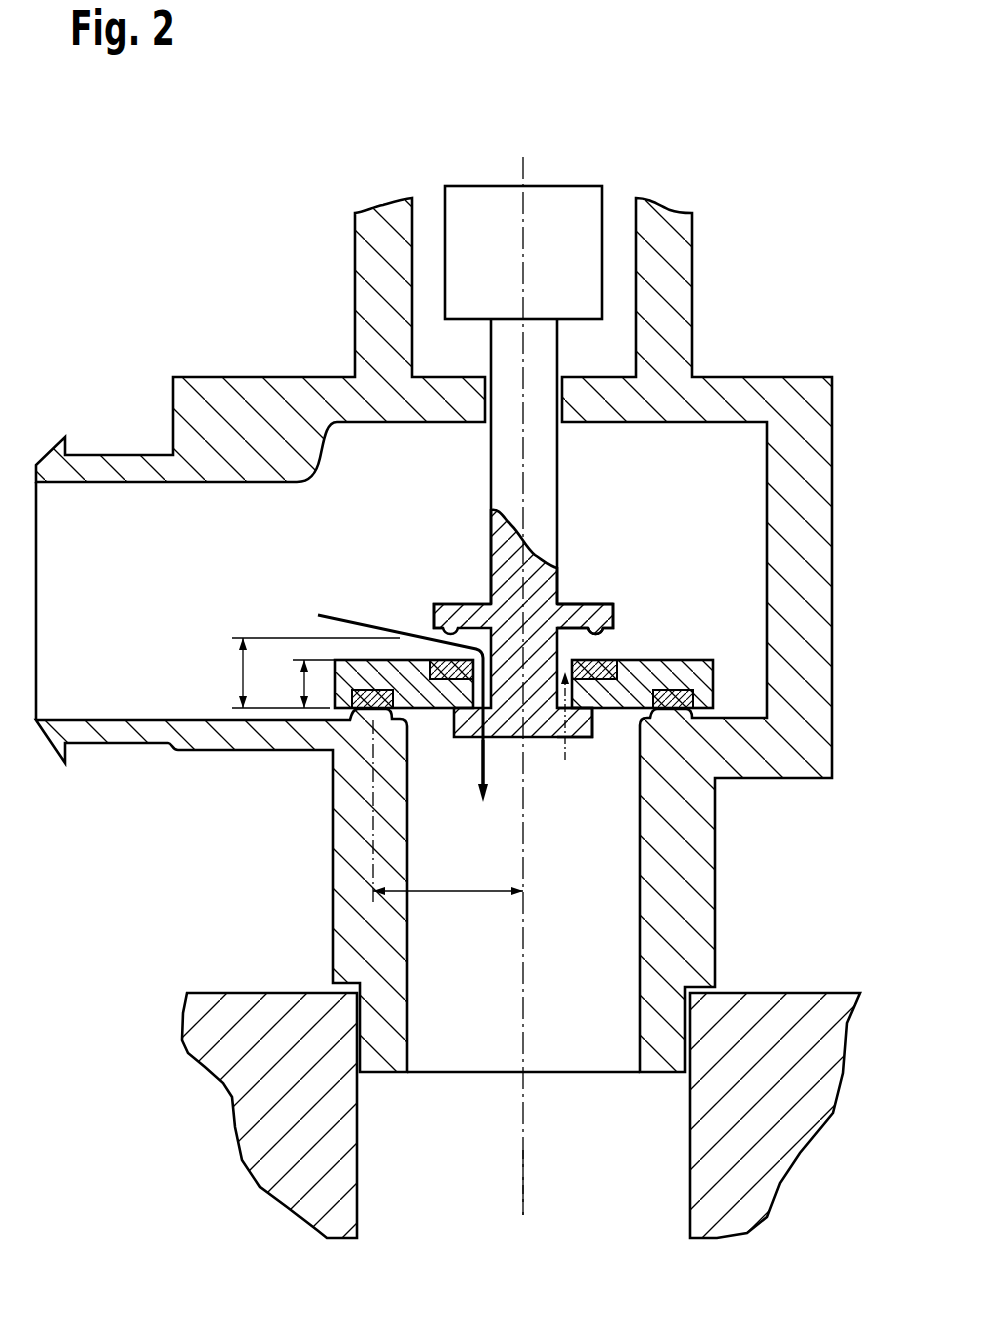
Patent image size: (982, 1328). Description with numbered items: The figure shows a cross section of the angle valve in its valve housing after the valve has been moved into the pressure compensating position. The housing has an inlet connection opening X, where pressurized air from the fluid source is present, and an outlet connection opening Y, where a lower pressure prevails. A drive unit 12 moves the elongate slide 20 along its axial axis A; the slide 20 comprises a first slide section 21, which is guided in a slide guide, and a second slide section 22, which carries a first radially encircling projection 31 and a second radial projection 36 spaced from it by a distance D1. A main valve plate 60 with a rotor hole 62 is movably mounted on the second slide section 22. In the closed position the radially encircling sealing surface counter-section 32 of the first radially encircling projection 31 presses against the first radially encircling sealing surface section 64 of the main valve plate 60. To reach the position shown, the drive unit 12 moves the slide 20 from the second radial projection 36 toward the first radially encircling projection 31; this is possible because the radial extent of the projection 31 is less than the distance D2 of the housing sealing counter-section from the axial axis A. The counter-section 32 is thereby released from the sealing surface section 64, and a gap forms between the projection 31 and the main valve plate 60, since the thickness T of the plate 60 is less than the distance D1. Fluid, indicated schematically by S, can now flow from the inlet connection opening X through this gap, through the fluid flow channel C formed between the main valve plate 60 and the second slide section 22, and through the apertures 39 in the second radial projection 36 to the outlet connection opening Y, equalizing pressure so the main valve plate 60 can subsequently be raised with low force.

The drive unit 12 is at (567, 186).
The slide 20 is at (509, 569).
The first slide section 21 is at (491, 517).
The second slide section 22 is at (436, 585).
The first radially encircling projection 31 is at (590, 613).
The radially encircling sealing surface counter-section 32 is at (600, 636).
The second radial projection 36 is at (583, 738).
The apertures 39 is at (487, 738).
The main valve plate 60 is at (644, 637).
The rotor hole 62 is at (569, 620).
The first radially encircling sealing surface section 64 is at (603, 664).
The fluid flow S is at (399, 697).
The fluid flow channel C is at (572, 710).
The distance between the first radially encircling projection and the second radial D1 is at (300, 673).
The distance of the sealing surface counter-section of the valve housing from the ax D2 is at (448, 812).
The thickness of the main valve plate T is at (305, 684).
The inlet connection opening X is at (50, 594).
The outlet connection opening Y is at (435, 1049).
The axial axis A is at (524, 1207).